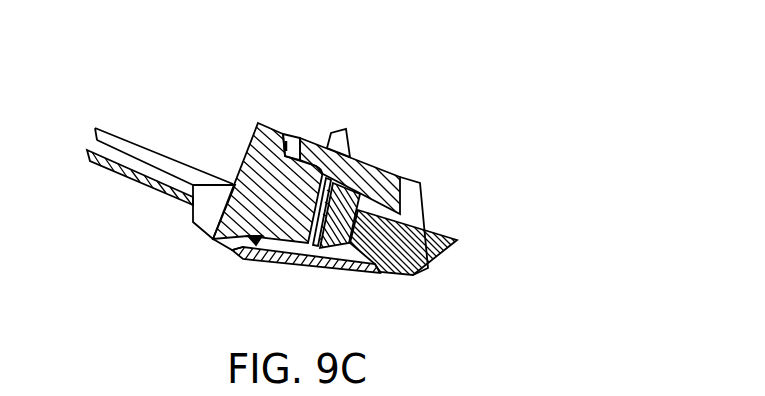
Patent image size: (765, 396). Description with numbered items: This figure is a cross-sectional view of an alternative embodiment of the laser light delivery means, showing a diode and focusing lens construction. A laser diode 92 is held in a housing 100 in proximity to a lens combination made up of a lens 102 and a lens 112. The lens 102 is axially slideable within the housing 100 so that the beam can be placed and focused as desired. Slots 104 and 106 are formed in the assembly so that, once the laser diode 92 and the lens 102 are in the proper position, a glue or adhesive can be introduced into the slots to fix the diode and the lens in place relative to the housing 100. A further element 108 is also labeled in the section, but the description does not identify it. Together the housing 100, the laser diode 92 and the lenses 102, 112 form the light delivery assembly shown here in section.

The laser diode 92 is at (247, 152).
The housing 100 is at (377, 167).
The lens 102 is at (448, 240).
The slot 104 is at (300, 140).
The slot 106 is at (418, 197).
The protrusion 108 is at (343, 132).
The lens 112 is at (322, 262).